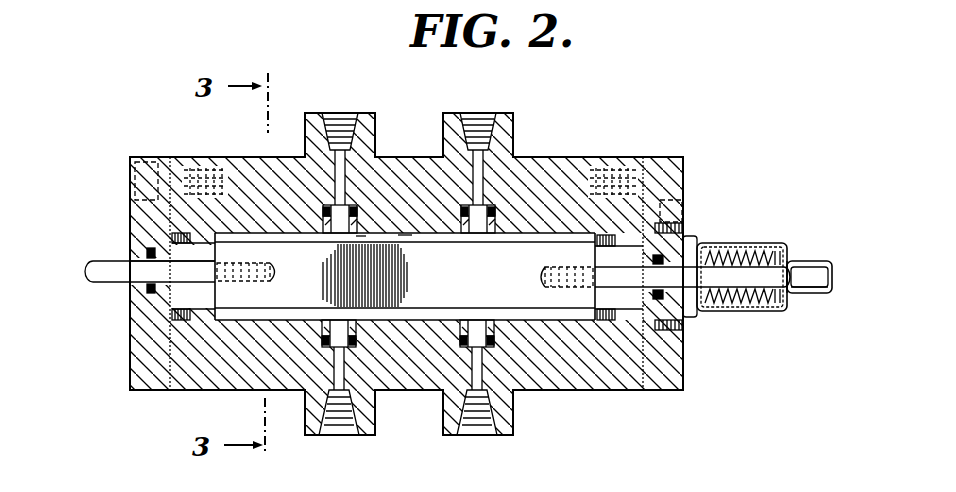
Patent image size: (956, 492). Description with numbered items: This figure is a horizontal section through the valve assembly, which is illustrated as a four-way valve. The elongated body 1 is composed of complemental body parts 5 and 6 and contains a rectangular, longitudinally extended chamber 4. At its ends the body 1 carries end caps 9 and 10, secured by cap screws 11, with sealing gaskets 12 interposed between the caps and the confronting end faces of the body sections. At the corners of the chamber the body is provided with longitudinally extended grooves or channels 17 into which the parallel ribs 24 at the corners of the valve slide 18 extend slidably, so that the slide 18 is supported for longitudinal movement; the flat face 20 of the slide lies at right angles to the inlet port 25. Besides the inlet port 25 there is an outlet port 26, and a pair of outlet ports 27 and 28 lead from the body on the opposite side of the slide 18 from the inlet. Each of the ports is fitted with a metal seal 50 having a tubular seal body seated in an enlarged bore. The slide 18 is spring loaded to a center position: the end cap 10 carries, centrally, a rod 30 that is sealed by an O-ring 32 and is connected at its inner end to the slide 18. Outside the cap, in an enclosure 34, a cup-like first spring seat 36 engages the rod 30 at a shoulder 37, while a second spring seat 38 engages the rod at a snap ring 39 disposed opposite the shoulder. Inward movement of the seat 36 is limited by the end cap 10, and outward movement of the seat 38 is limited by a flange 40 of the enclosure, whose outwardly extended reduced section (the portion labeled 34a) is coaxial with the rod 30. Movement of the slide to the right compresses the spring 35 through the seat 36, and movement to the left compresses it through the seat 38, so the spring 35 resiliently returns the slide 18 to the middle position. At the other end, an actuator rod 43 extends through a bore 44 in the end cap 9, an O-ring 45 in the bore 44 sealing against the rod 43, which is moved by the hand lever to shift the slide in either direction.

The elongated body 1 is at (616, 125).
The rectangular longitudinally extended chamber 4 is at (405, 235).
The complemental body part 5 is at (245, 390).
The complemental body part 6 is at (256, 178).
The end cap 9 is at (185, 168).
The end cap 10 is at (658, 163).
The cap screws 11 is at (147, 206).
The sealing gaskets 12 is at (172, 165).
The grooves or channels 17 is at (190, 240).
The valve slide 18 is at (396, 333).
The flat face 20 is at (362, 236).
The ribs 24 is at (513, 317).
The inlet port 25 is at (345, 162).
The outlet port 26 is at (485, 163).
The outlet port 27 is at (343, 389).
The outlet port 28 is at (508, 392).
The rod 30 is at (650, 275).
The O-ring 32 is at (637, 298).
The enclosure 34 is at (730, 243).
The bore 34a is at (828, 280).
The spring 35 is at (760, 251).
The first spring seat 36 is at (703, 306).
The shoulder 37 is at (744, 288).
The second spring seat 38 is at (797, 261).
The snap ring 39 is at (807, 288).
The flange 40 is at (787, 309).
The actuator rod 43 is at (110, 283).
The bore 44 is at (130, 262).
The O-ring 45 is at (150, 300).
The metal seal 50 is at (323, 215).